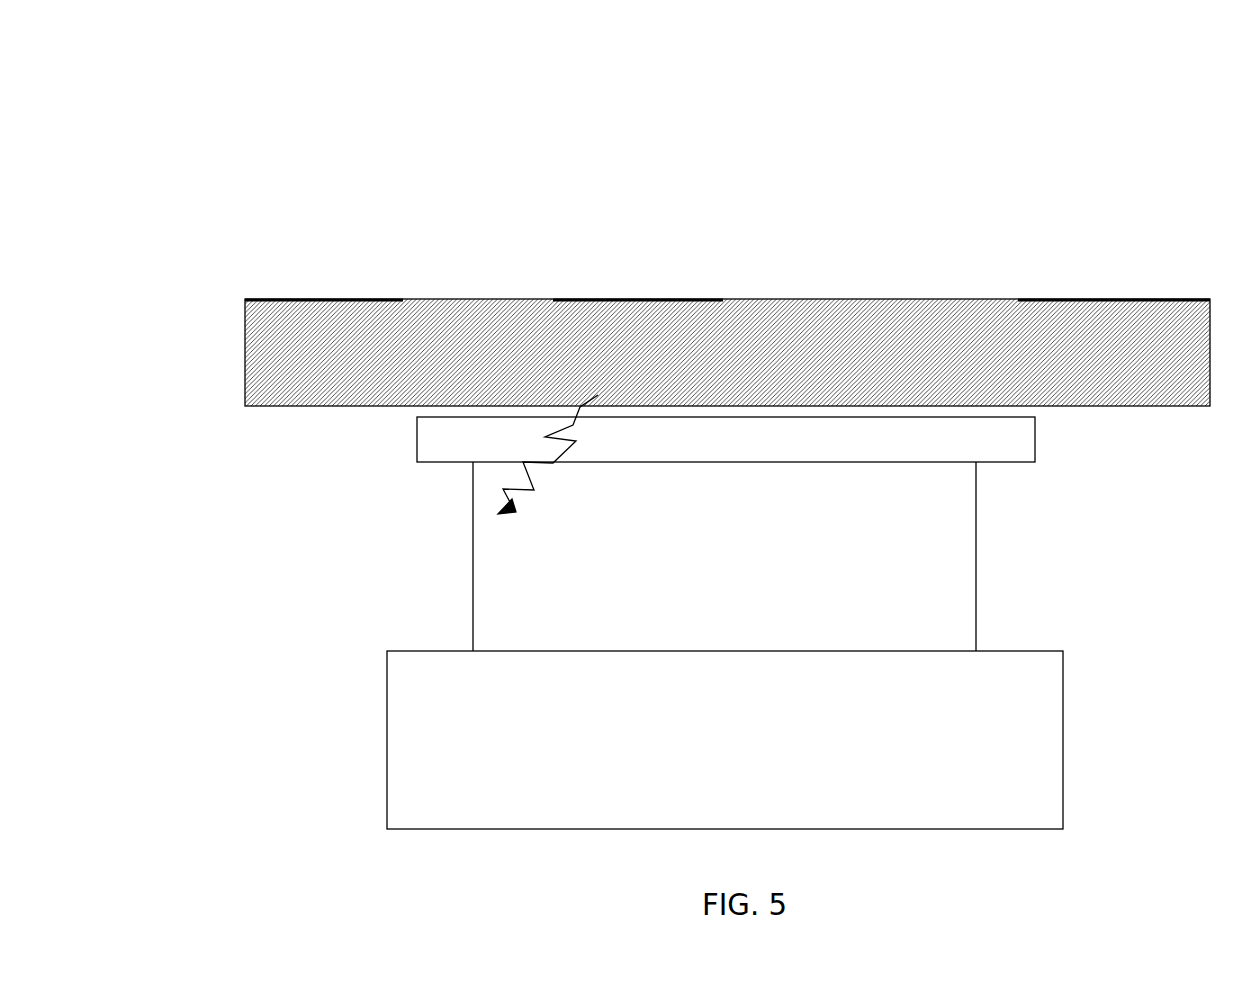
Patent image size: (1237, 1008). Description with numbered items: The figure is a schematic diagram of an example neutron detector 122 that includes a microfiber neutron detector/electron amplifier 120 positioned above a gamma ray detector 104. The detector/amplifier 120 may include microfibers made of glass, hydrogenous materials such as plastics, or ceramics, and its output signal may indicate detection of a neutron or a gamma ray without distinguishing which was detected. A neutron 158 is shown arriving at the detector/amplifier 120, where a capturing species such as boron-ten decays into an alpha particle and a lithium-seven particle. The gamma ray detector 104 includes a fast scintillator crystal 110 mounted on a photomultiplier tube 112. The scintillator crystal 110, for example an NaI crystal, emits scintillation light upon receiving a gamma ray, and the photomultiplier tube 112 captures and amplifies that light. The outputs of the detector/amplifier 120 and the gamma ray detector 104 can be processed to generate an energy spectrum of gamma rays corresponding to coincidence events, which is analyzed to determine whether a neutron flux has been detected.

The neutron detector 122 is at (493, 138).
The microfiber neutron detector/electron amplifier 120 is at (237, 285).
The neutron 158 is at (598, 395).
The gamma ray detector 104 is at (357, 468).
The fast scintillator crystal 110 is at (976, 553).
The photomultiplier tube 112 is at (1063, 730).